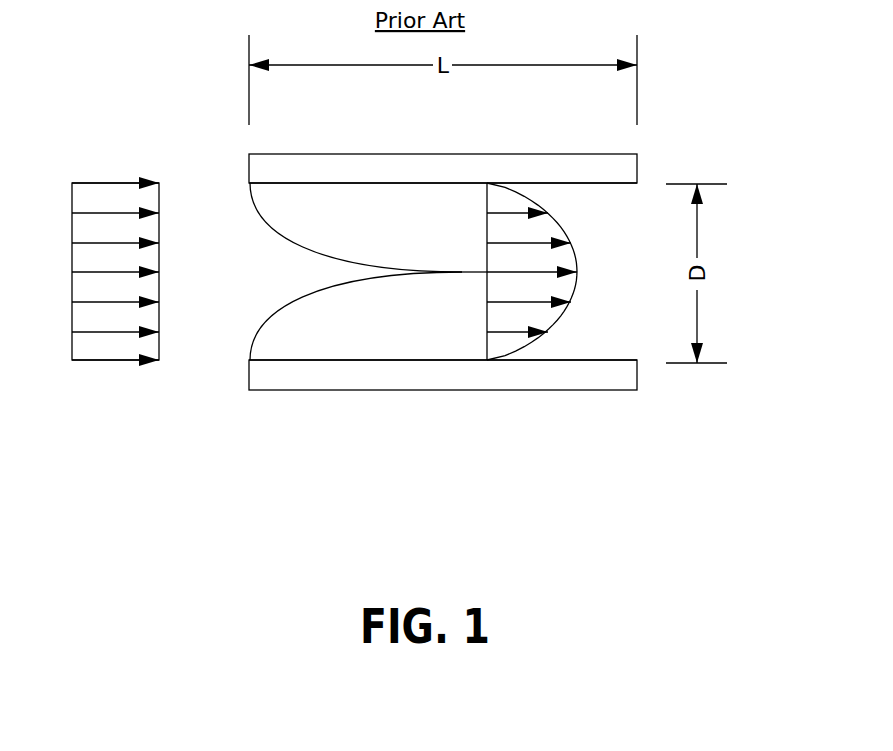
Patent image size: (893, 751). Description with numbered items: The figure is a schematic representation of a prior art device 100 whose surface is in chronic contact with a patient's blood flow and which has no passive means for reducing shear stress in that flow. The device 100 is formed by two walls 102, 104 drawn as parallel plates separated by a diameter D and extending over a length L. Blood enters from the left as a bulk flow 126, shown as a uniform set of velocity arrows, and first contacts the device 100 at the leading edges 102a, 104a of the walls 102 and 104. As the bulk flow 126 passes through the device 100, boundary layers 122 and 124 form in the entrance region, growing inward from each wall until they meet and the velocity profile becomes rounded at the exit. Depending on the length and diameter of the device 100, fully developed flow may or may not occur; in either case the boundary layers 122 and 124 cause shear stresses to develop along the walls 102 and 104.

The prior art device 100 is at (400, 233).
The wall 102 is at (637, 154).
The leading edge 102a is at (249, 170).
The wall 104 is at (637, 390).
The leading edge 104a is at (249, 378).
The boundary layer 122 is at (356, 316).
The boundary layer 124 is at (356, 227).
The bulk flow 126 is at (100, 360).